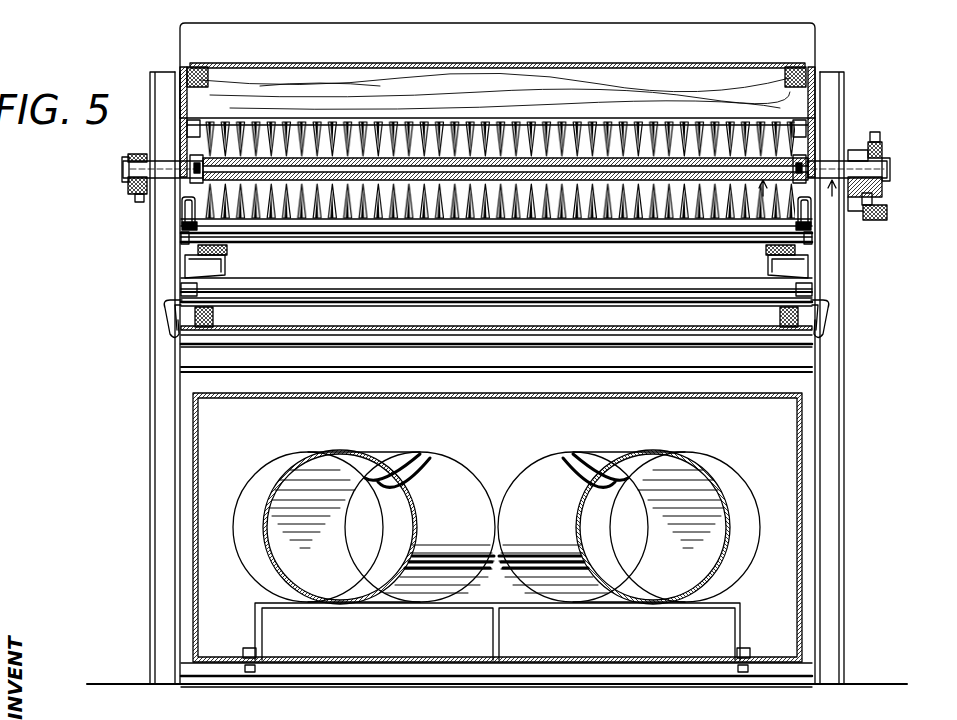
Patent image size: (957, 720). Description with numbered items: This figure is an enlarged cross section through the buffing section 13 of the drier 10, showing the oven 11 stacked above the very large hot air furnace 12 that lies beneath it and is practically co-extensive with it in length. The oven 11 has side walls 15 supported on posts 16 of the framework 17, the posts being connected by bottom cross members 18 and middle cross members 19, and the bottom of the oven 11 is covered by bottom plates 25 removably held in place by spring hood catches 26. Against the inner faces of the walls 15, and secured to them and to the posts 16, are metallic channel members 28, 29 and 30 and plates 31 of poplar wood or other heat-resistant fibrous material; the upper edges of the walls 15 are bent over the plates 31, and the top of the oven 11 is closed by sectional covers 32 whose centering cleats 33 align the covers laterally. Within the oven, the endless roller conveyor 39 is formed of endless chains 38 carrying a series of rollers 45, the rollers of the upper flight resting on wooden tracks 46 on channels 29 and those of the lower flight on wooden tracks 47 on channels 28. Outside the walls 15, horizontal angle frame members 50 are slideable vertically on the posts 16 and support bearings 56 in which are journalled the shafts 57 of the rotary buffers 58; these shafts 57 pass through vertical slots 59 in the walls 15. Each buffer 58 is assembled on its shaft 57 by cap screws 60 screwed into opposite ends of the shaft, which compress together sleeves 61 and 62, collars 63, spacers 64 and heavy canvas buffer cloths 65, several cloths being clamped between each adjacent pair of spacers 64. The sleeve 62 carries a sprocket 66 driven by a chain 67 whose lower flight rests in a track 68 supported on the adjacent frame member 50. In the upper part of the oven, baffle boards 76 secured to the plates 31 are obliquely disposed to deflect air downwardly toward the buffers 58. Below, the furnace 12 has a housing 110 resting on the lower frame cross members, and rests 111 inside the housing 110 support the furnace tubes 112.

The drier 10 is at (91, 266).
The oven 11 is at (788, 195).
The hot air furnace 12 is at (820, 481).
The buffing section 13 is at (820, 70).
The side walls 15 is at (181, 219).
The posts 16 is at (156, 382).
The framework 17 is at (140, 427).
The bottom cross members 18 is at (807, 672).
The middle cross members 19 is at (677, 372).
The bottom plates 25 is at (613, 328).
The spring hood catches 26 is at (168, 328).
The channel member 28 is at (166, 308).
The channel member 29 is at (226, 262).
The channel member 30 is at (184, 224).
The plates 31 is at (183, 80).
The sectional covers 32 is at (470, 58).
The centering cleats 33 is at (206, 67).
The endless chains 38 is at (180, 286).
The endless roller conveyor 39 is at (625, 280).
The rollers 45 is at (590, 245).
The wooden tracks 46 is at (228, 251).
The wooden tracks 47 is at (214, 318).
The horizontal angle frame members 50 is at (150, 211).
The bearings 56 is at (128, 188).
The shafts 57 is at (129, 158).
The rotary buffers 58 is at (235, 130).
The vertical slots 59 is at (198, 156).
The cap screws 60 is at (122, 166).
The sleeve 61 is at (176, 158).
The sleeve 62 is at (852, 152).
The collars 63 is at (192, 150).
The spacers 64 is at (286, 154).
The buffer cloths 65 is at (338, 142).
The sprocket 66 is at (884, 160).
The chain 67 is at (882, 194).
The track 68 is at (888, 211).
The baffle boards 76 is at (652, 64).
The housing 110 is at (803, 530).
The rests 111 is at (738, 613).
The furnace tubes 112 is at (388, 455).